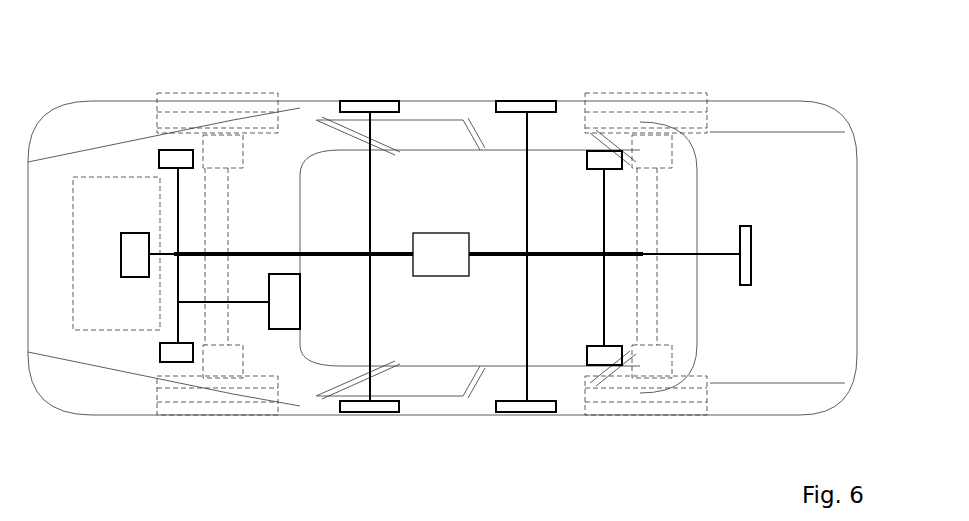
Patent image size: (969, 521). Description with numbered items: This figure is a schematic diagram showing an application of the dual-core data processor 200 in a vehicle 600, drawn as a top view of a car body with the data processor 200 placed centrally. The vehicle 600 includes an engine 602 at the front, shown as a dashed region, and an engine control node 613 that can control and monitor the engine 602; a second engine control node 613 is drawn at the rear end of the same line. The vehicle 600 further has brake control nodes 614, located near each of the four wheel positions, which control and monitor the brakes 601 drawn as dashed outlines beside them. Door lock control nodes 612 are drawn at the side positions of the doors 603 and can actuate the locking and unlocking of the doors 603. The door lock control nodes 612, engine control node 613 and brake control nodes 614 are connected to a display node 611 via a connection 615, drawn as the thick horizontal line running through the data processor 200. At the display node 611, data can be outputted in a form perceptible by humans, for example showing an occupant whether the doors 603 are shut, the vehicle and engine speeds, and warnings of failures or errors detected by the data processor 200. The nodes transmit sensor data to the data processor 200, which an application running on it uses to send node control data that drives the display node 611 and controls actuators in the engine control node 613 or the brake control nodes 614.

The data processor 200 is at (457, 264).
The vehicle 600 is at (139, 438).
The brakes 601 is at (218, 157).
The engine 602 is at (124, 221).
The doors 603 is at (438, 106).
The display node 611 is at (285, 300).
The door lock control nodes 612 is at (368, 107).
The engine control node 613 is at (137, 253).
The brake control nodes 614 is at (178, 158).
The connection 615 is at (550, 257).